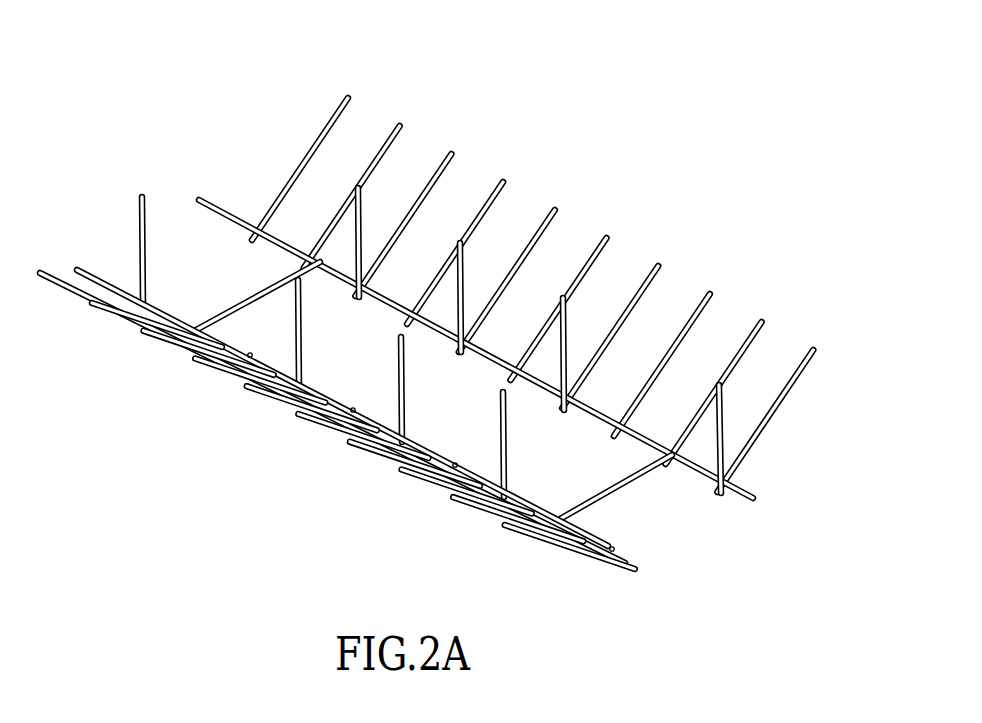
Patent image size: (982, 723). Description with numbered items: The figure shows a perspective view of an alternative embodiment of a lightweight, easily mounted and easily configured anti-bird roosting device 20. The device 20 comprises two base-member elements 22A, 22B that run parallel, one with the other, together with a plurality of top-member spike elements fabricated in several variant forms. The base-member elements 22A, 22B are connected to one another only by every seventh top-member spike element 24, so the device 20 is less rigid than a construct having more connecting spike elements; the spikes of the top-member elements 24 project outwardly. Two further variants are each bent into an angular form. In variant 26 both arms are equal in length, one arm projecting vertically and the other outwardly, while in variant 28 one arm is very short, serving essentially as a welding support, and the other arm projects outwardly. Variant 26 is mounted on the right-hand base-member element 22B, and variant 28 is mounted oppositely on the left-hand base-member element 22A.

The anti-bird roosting device 20 is at (214, 106).
The left-hand base-member element 22A is at (632, 558).
The right-hand base-member element 22B is at (698, 477).
The top-member spike element 24 is at (757, 320).
The variant top-member element 26 is at (802, 367).
The variant top-member element 28 is at (558, 547).